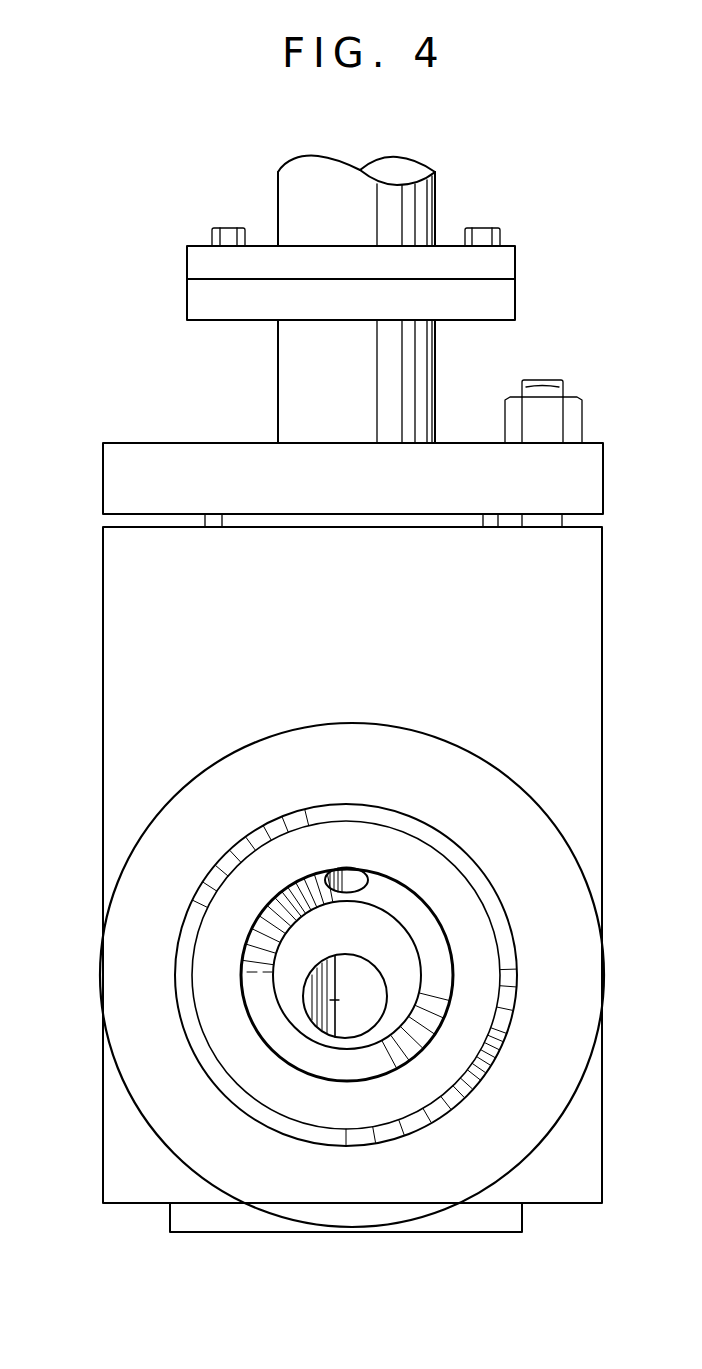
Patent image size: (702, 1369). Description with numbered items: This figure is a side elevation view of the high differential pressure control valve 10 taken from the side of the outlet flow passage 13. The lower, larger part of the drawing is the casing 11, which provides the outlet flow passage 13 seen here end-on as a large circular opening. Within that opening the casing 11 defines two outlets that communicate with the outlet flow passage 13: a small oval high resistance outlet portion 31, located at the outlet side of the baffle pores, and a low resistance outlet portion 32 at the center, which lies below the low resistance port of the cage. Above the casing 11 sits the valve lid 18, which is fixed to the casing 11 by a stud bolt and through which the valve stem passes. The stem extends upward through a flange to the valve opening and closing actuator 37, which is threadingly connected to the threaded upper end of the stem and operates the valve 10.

The high differential pressure control valve 10 is at (145, 375).
The valve opening and closing actuator 37 is at (288, 207).
The valve lid 18 is at (112, 492).
The casing 11 is at (110, 655).
The outlet flow passage 13 is at (269, 904).
The high resistance outlet portion 31 is at (358, 873).
The low resistance outlet portion 32 is at (331, 1022).